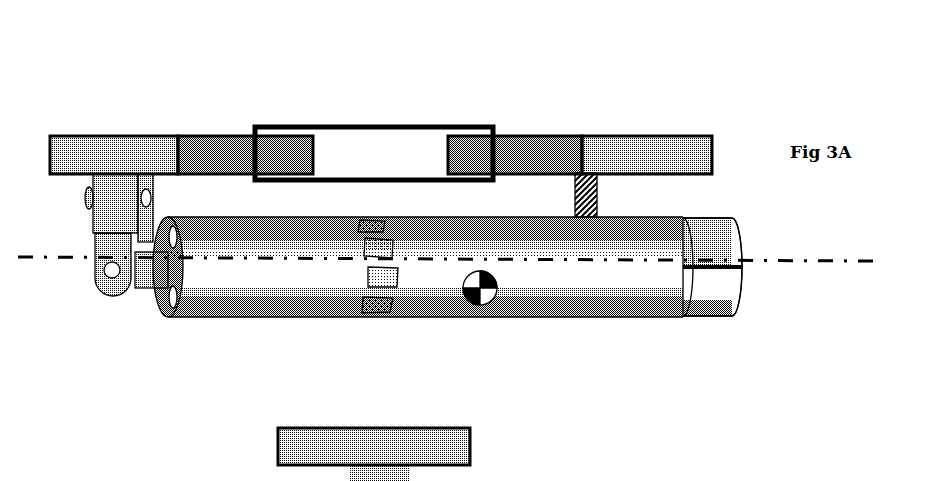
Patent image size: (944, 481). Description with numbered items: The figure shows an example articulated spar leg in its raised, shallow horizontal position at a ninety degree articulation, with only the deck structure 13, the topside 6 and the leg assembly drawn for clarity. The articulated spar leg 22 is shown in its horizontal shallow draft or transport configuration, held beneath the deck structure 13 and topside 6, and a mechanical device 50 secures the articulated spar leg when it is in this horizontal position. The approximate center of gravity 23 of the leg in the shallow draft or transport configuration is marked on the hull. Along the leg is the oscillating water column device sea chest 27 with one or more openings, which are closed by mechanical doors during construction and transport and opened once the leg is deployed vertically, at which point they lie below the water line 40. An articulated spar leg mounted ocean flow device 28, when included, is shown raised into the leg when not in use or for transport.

The topside 6 is at (380, 152).
The deck structure 13 is at (636, 138).
The mechanical device 50 is at (582, 173).
The articulated spar leg in horizontal shallow draft or transport configuration 22 is at (310, 283).
The oscillating water column device sea chest 27 is at (377, 312).
The approximate center of gravity of the articulated spar leg in transport configura 23 is at (482, 290).
The articulated spar leg mounted ocean flow device 28 is at (700, 317).
The water line 40 is at (790, 262).